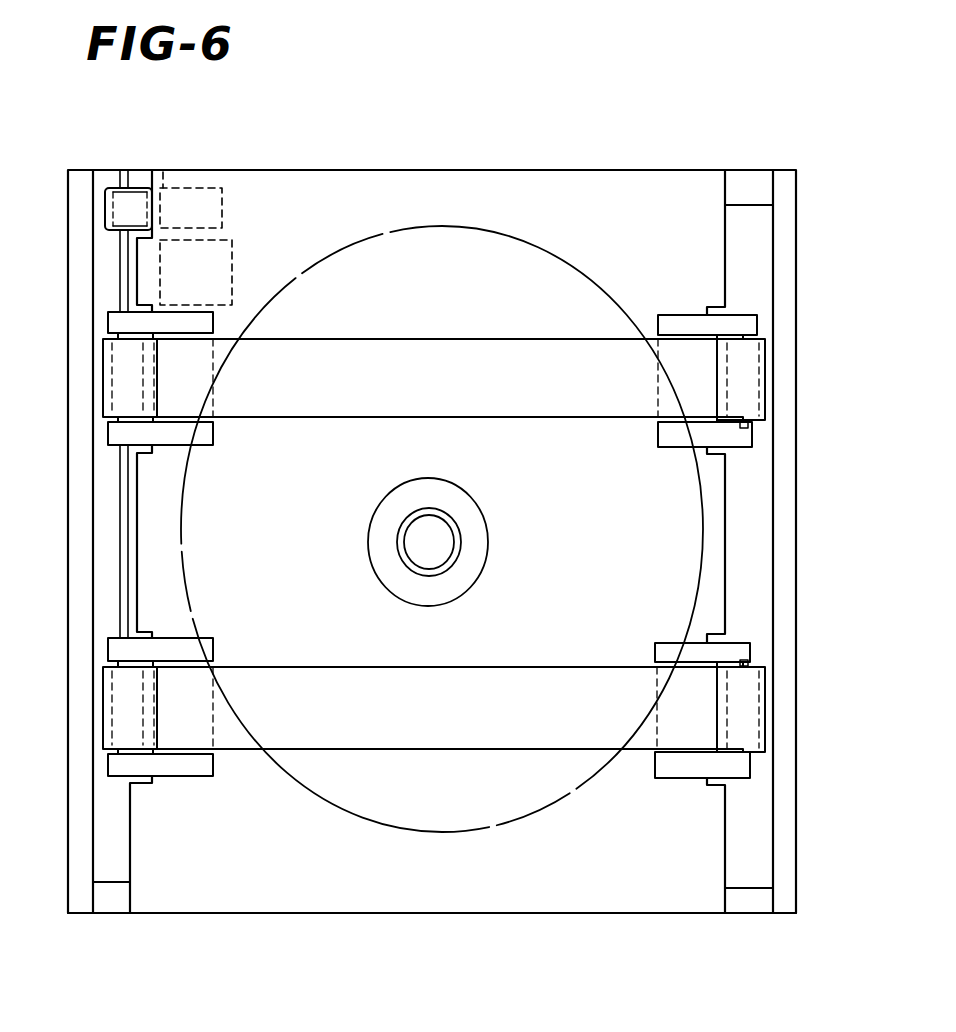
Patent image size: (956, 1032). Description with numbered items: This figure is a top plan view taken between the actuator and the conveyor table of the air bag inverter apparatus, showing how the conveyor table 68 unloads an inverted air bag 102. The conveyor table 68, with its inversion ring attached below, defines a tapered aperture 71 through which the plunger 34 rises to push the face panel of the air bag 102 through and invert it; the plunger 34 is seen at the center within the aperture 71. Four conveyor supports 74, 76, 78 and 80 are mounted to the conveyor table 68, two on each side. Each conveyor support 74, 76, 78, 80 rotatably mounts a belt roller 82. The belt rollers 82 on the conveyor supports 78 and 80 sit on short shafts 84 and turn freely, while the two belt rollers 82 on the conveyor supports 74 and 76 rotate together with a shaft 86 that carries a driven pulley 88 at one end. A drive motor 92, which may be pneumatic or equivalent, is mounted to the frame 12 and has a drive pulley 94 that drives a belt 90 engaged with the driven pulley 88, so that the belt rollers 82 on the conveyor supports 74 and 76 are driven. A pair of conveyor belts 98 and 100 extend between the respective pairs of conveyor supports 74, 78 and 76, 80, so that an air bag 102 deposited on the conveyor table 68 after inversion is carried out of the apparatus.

The frame 12 is at (773, 170).
The plunger 34 is at (440, 522).
The conveyor table 68 is at (560, 905).
The aperture 71 is at (477, 543).
The conveyor support 74 is at (203, 440).
The conveyor support 76 is at (198, 763).
The conveyor support 78 is at (743, 325).
The conveyor support 80 is at (745, 770).
The belt roller 82 is at (108, 378).
The short shaft 84 is at (747, 430).
The shaft 86 is at (120, 547).
The driven pulley 88 is at (122, 186).
The belt 90 is at (163, 172).
The drive motor 92 is at (236, 268).
The drive pulley 94 is at (212, 185).
The conveyor belt 98 is at (438, 339).
The conveyor belt 100 is at (512, 668).
The air bag 102 is at (460, 226).